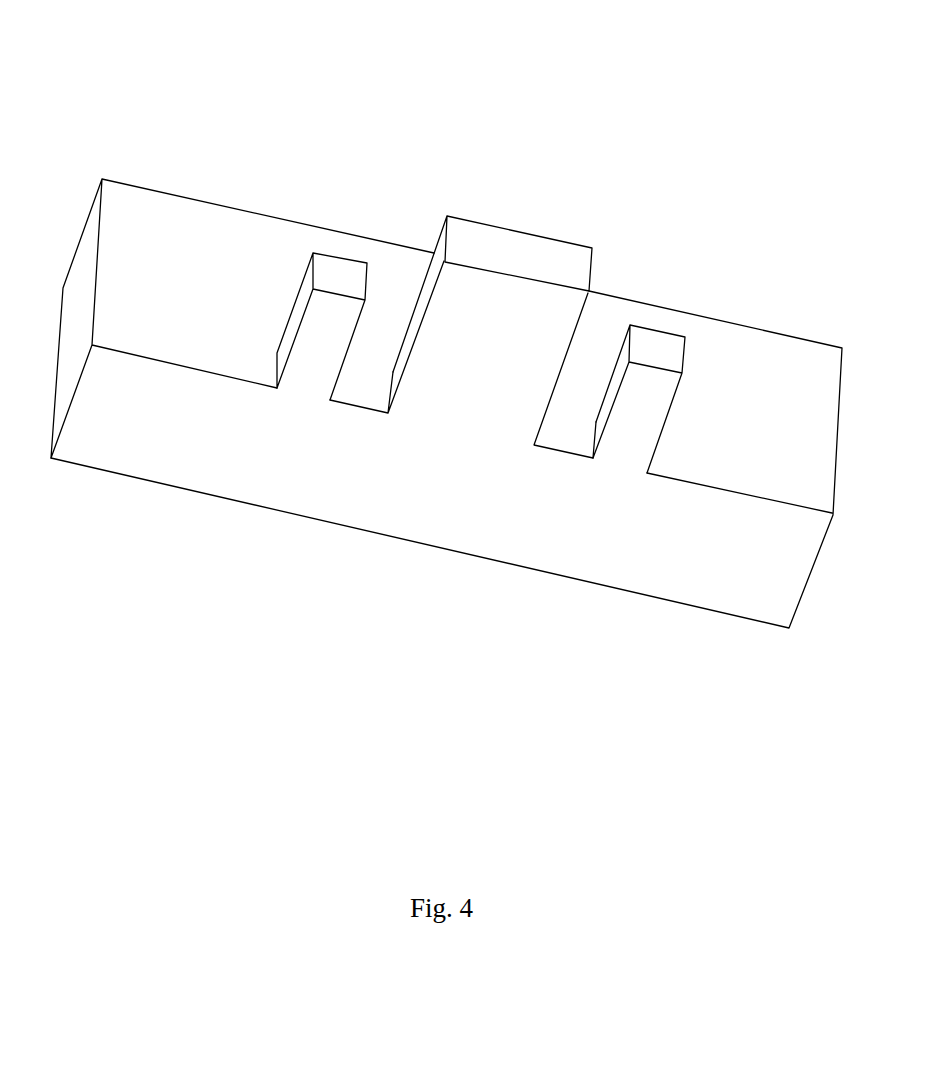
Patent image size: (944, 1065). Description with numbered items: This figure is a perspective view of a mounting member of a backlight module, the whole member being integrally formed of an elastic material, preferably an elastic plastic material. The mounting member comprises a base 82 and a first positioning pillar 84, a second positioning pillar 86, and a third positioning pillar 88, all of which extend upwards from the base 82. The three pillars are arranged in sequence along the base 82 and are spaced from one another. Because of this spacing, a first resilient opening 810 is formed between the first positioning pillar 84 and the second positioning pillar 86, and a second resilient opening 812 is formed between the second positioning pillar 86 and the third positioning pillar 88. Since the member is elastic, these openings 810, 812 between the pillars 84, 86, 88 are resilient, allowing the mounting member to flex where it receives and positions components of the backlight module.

The base 82 is at (207, 240).
The first positioning pillar 84 is at (340, 277).
The second positioning pillar 86 is at (515, 248).
The third positioning pillar 88 is at (653, 343).
The first resilient opening 810 is at (372, 367).
The second resilient opening 812 is at (573, 405).